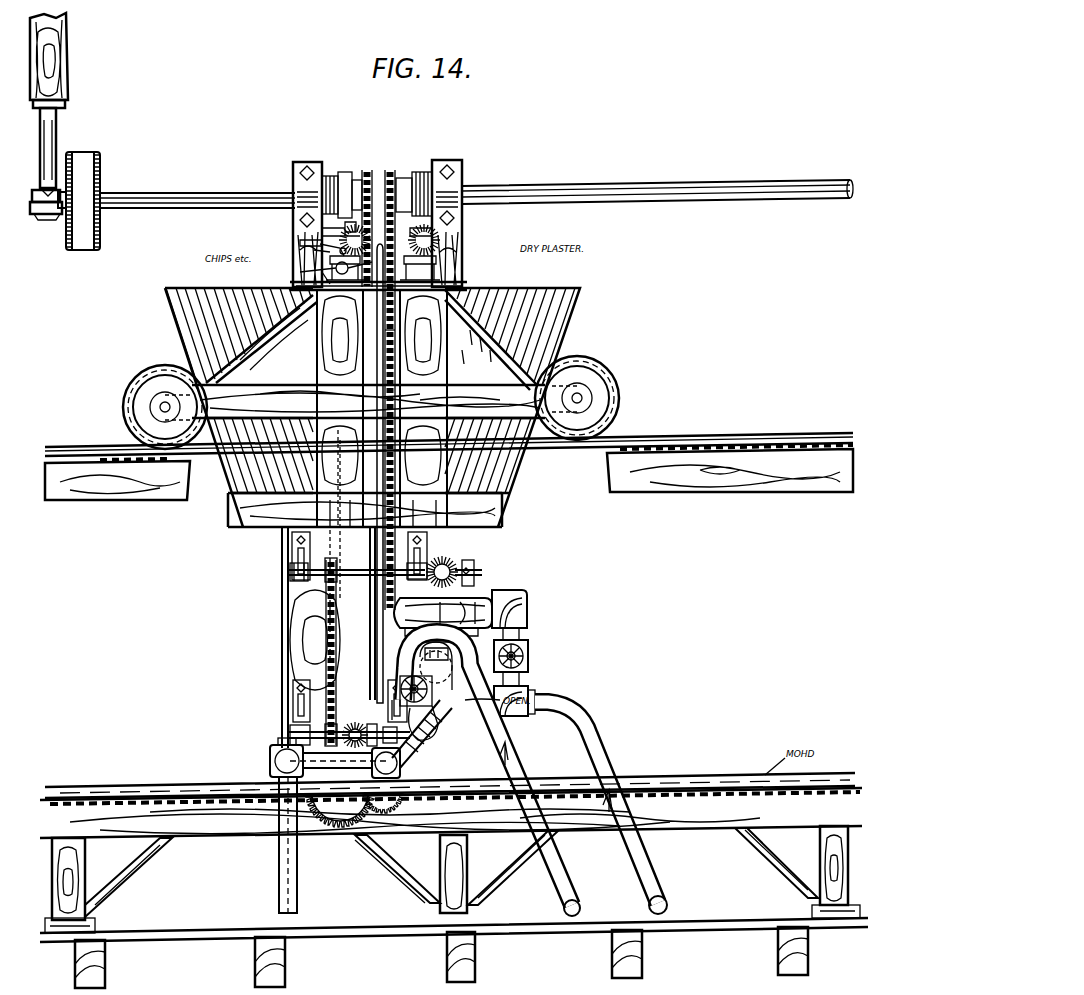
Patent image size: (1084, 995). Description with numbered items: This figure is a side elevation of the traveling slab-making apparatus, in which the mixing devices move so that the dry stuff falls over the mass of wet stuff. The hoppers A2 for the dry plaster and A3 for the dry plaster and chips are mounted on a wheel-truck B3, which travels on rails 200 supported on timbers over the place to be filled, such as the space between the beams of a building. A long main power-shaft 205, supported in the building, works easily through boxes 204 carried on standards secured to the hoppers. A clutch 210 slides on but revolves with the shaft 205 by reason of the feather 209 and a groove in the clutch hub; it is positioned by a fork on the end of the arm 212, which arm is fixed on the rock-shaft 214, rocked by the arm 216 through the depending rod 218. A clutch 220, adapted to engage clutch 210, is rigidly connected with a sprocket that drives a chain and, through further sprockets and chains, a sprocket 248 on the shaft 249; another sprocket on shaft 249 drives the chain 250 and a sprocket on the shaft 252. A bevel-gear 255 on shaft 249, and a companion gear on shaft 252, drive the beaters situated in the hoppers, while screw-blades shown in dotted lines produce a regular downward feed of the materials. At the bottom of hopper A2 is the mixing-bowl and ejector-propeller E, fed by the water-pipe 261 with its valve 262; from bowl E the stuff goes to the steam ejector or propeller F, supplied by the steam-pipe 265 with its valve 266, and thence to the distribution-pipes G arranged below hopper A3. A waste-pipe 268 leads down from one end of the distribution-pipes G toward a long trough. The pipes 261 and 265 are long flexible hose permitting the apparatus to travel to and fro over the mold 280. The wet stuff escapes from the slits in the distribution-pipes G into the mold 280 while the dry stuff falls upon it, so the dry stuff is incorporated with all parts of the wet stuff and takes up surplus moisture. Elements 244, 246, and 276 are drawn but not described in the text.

The main power-shaft 205 is at (197, 179).
The boxes 204 is at (322, 177).
The feather 209 is at (795, 178).
The clutch 210 is at (352, 178).
The clutch 220 is at (420, 148).
The arm 212 is at (318, 246).
The rock-shaft 214 is at (335, 273).
The arm 216 is at (382, 475).
The depending rod 218 is at (396, 473).
The sprocket 248 is at (396, 340).
The hopper A3 is at (150, 312).
The hopper A2 is at (620, 304).
The wheel-truck B3 is at (100, 405).
The cross beam 244 is at (368, 401).
The rails 200 is at (800, 434).
The shaft 249 is at (356, 572).
The bevel-gear 255 is at (468, 565).
The chain 250 is at (326, 622).
The shaft 252 is at (263, 733).
The bracket 246 is at (392, 703).
The distribution-pipes G is at (332, 758).
The shaft 276 is at (338, 764).
The waste-pipe 268 is at (267, 845).
The mixing-bowl and ejector-propeller E is at (487, 600).
The valve 262 is at (530, 650).
The water-pipe 261 is at (601, 808).
The steam-pipe 265 is at (492, 738).
The valve 266 is at (430, 690).
The steam ejector or propeller F is at (436, 735).
The mold 280 is at (732, 775).